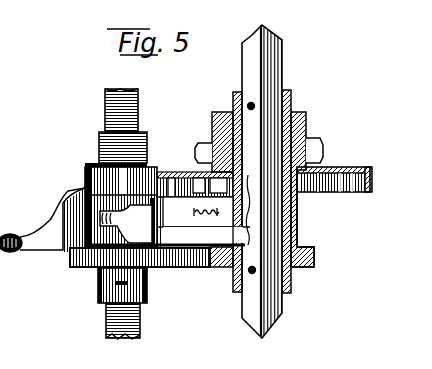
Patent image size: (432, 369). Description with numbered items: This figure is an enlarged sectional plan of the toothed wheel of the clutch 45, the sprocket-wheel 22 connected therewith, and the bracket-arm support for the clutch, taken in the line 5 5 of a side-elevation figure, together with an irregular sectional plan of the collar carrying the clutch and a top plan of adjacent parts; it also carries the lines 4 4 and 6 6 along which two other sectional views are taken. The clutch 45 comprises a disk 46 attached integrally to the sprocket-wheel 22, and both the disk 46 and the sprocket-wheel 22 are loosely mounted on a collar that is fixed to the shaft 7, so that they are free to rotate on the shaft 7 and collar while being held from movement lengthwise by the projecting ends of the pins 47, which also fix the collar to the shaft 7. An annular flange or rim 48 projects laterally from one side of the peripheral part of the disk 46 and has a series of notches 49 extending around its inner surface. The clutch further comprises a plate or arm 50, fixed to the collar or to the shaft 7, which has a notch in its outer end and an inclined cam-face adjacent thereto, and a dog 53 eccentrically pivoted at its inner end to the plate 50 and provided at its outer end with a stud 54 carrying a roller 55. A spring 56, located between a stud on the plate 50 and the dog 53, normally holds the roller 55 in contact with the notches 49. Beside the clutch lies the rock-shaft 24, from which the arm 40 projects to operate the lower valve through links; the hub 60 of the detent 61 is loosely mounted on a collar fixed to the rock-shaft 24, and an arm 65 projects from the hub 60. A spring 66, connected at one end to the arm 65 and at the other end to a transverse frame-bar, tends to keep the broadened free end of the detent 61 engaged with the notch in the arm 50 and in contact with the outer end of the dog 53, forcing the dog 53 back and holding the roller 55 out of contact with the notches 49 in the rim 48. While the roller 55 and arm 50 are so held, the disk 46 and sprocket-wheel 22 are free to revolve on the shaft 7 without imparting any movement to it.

The shaft 7 is at (270, 67).
The pins 47 is at (250, 102).
The sprocket-wheel 22 is at (212, 143).
The disk 46 is at (347, 171).
The annular flange or rim 48 is at (371, 176).
The clutch 45 is at (324, 207).
The notches 49 is at (348, 208).
The roller 55 is at (162, 170).
The stud 54 is at (177, 170).
The dog 53 is at (203, 211).
The plate or arm 50 is at (203, 236).
The spring 56 is at (208, 216).
The hub 60 is at (157, 235).
The detent 61 is at (126, 224).
The arm 65 is at (63, 229).
The spring 66 is at (11, 233).
The rock-shaft 24 is at (112, 326).
The arm 40 is at (0, 340).
The line 4 4 is at (65, 258).
The line 5 5 is at (3, 178).
The line 6 6 is at (75, 195).